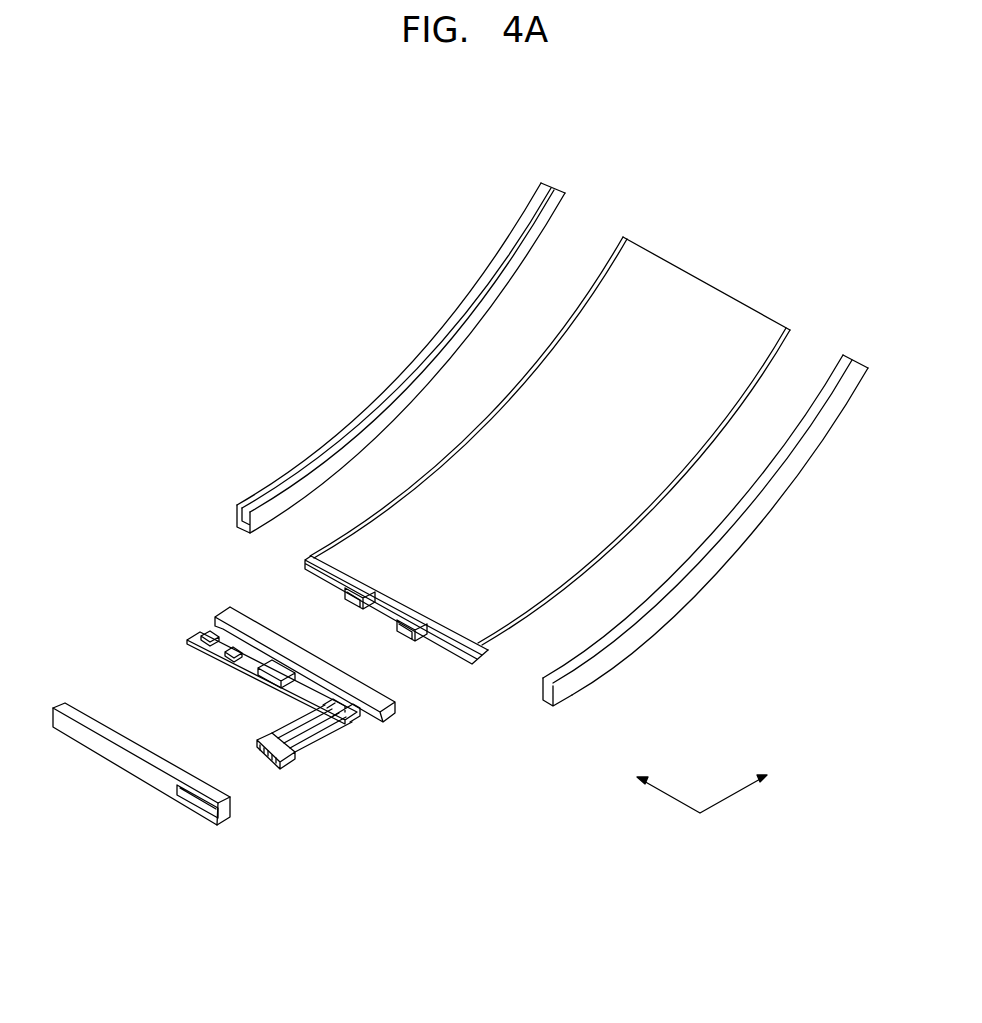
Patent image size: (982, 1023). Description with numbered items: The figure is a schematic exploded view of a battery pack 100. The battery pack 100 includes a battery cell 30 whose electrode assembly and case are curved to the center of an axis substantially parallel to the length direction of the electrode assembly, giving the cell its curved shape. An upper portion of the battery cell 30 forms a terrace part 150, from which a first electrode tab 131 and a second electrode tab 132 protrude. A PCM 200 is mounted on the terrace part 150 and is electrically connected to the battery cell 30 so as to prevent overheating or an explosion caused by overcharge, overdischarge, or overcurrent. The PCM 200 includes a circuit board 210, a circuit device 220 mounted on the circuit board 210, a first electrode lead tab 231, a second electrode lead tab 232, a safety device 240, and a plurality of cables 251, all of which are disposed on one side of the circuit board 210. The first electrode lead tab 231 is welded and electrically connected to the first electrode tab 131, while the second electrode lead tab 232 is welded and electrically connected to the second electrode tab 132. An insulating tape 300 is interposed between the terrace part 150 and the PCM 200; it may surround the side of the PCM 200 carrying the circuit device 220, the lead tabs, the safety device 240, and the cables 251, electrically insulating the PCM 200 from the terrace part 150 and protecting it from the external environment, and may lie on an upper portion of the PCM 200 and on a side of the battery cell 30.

The battery pack 100 is at (745, 203).
The battery cell 30 is at (698, 295).
The terrace part 150 is at (315, 571).
The first electrode tab 131 is at (353, 609).
The second electrode tab 132 is at (407, 639).
The insulating tape 300 is at (387, 717).
The PCM 200 is at (170, 632).
The circuit board 210 is at (200, 632).
The safety device 240 is at (193, 648).
The second electrode lead tab 232 is at (237, 665).
The circuit device 220 is at (272, 677).
The first electrode lead tab 231 is at (287, 700).
The cables 251 is at (318, 742).